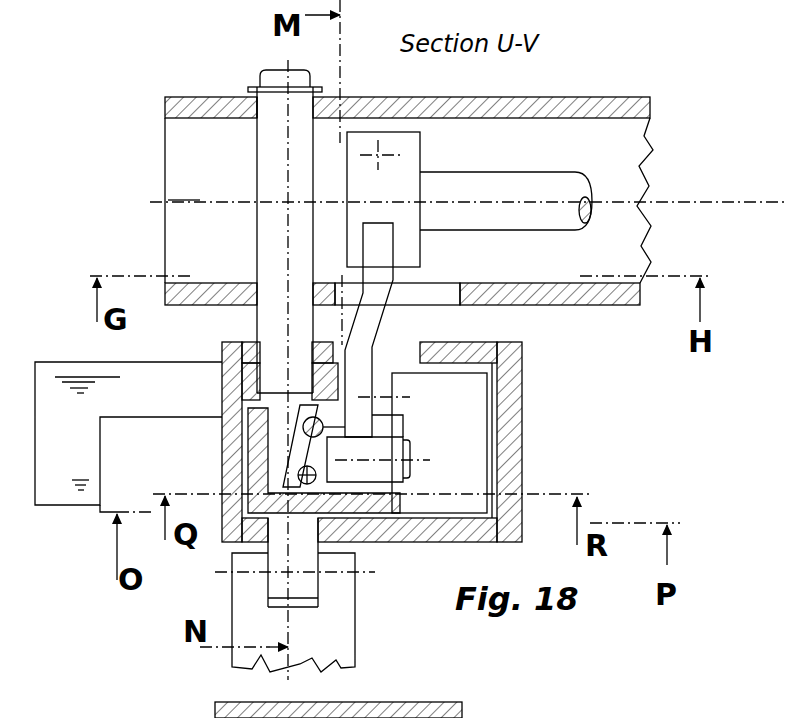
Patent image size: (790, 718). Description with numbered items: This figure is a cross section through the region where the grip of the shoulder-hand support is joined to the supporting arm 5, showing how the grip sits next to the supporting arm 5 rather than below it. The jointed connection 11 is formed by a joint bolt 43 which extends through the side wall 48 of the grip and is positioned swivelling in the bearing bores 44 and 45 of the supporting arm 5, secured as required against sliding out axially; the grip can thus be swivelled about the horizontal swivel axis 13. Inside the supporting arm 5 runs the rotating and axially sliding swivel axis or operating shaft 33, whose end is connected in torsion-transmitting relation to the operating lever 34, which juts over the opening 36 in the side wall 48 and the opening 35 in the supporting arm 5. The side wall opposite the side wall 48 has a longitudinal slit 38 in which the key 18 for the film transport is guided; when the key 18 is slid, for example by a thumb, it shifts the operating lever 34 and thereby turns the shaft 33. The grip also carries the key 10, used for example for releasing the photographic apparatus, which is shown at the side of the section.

The supporting arm 5 is at (569, 60).
The key 10 is at (59, 478).
The jointed connection 11 is at (405, 217).
The swivel axis 13 is at (293, 163).
The key 18 is at (340, 649).
The swivel axis or operating shaft 33 is at (515, 182).
The operating lever 34 is at (358, 408).
The opening 35 is at (443, 293).
The opening 36 is at (397, 350).
The longitudinal slit 38 is at (335, 543).
The joint bolt 43 is at (280, 80).
The bearing bore 44 is at (258, 108).
The bearing bore 45 is at (199, 230).
The side wall 48 is at (478, 342).